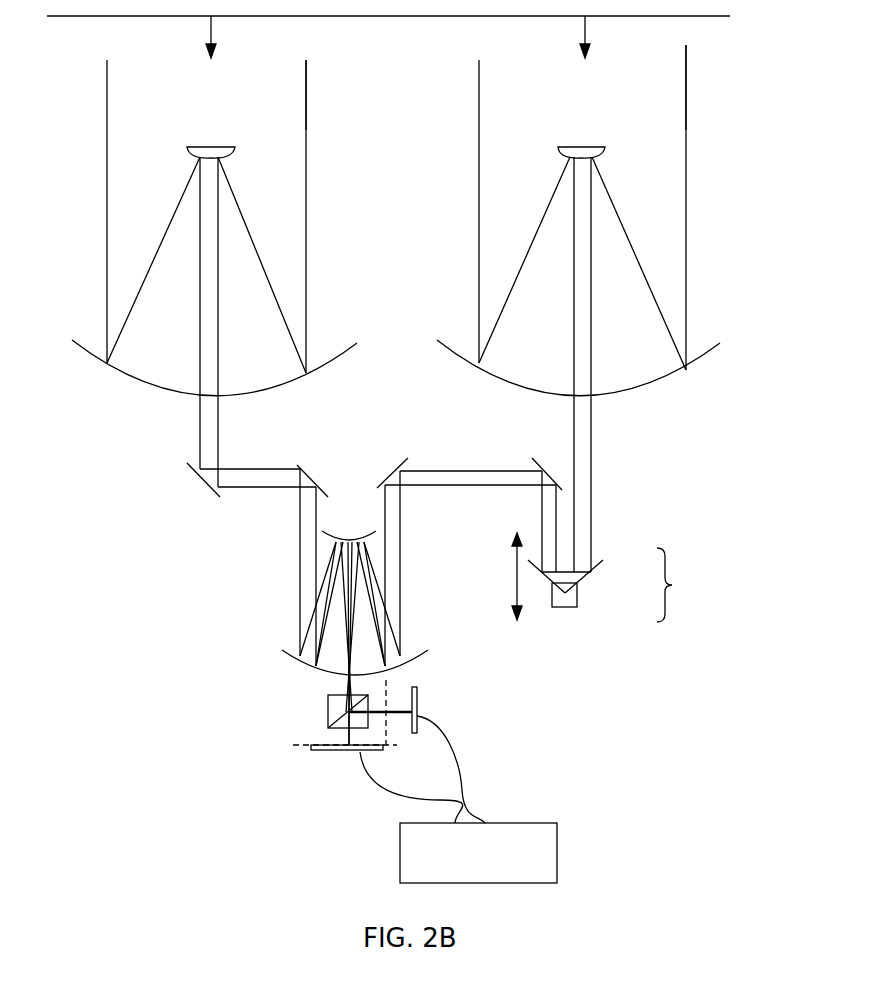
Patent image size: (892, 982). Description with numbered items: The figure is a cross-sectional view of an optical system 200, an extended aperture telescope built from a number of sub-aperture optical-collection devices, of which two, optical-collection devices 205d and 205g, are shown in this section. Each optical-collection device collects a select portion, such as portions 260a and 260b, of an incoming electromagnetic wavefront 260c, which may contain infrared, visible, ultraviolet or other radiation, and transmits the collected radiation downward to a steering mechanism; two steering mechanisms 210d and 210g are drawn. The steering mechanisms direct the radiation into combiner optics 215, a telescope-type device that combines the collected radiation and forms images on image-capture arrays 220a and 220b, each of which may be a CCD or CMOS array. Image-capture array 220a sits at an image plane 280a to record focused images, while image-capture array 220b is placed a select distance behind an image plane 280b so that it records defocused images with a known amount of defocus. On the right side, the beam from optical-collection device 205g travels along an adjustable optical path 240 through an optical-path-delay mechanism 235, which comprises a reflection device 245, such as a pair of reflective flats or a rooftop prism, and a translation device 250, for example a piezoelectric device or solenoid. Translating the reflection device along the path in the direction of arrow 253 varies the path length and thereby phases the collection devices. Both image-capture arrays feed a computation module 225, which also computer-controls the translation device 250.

The optical system 200 is at (176, 836).
The optical-collection device 205d is at (317, 155).
The optical-collection device 205g is at (457, 268).
The select portion of electromagnetic wavefront 260a is at (678, 88).
The select portion of electromagnetic wavefront 260b is at (317, 72).
The electromagnetic wavefront 260c is at (93, 23).
The steering mechanism 210d is at (290, 462).
The steering mechanism 210g is at (523, 455).
The adjustable optical path 240 is at (600, 448).
The combiner optics 215 is at (276, 612).
The arrow 253 is at (510, 568).
The optical-path-delay mechanism 235 is at (620, 594).
The reflection device 245 is at (588, 583).
The translation device 250 is at (558, 613).
The image plane 280a is at (294, 745).
The image plane 280b is at (388, 682).
The image-capture array 220a is at (334, 752).
The image-capture array 220b is at (418, 699).
The computation module 225 is at (575, 824).